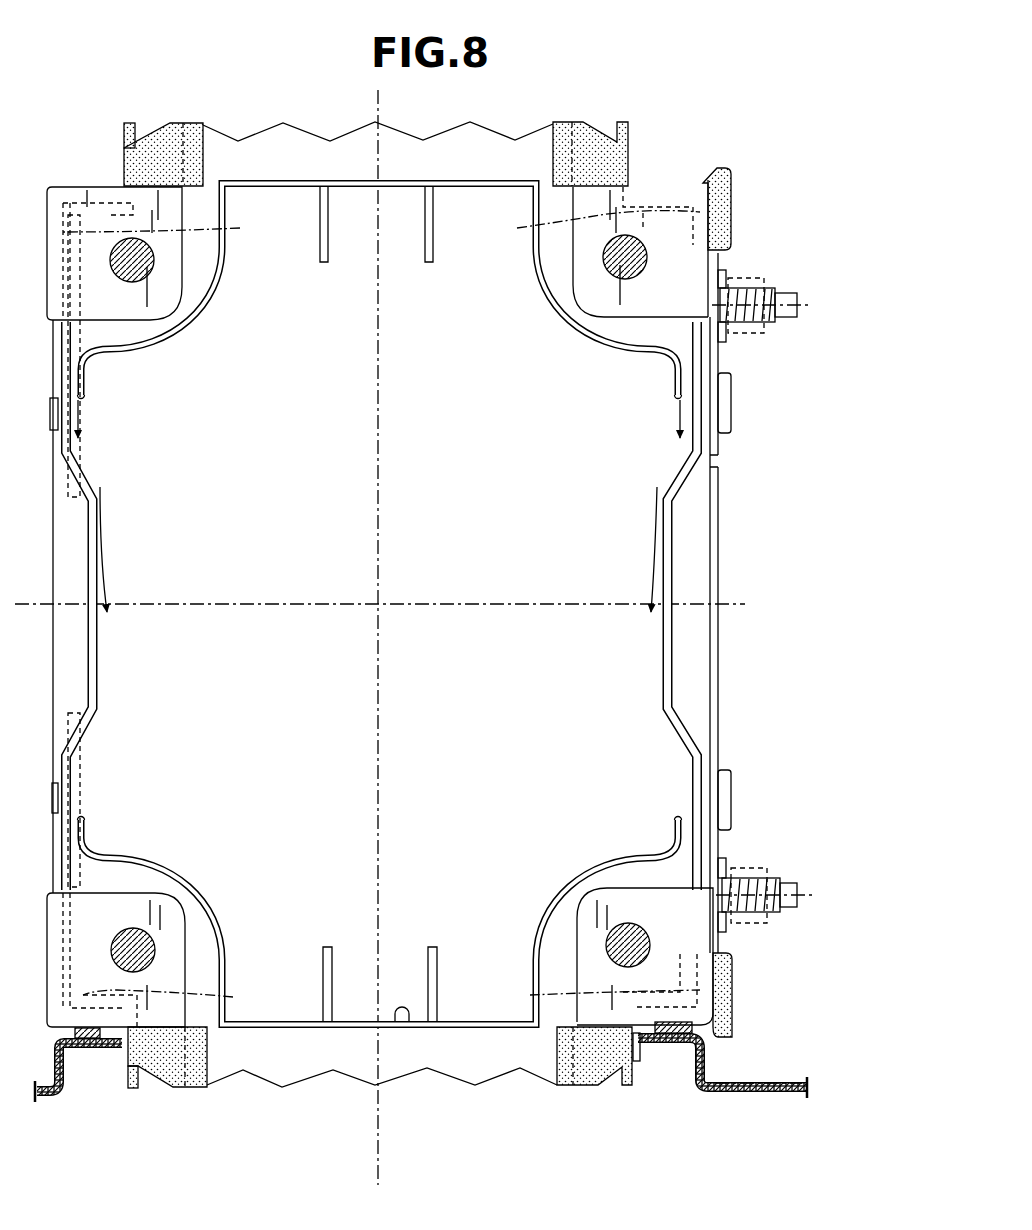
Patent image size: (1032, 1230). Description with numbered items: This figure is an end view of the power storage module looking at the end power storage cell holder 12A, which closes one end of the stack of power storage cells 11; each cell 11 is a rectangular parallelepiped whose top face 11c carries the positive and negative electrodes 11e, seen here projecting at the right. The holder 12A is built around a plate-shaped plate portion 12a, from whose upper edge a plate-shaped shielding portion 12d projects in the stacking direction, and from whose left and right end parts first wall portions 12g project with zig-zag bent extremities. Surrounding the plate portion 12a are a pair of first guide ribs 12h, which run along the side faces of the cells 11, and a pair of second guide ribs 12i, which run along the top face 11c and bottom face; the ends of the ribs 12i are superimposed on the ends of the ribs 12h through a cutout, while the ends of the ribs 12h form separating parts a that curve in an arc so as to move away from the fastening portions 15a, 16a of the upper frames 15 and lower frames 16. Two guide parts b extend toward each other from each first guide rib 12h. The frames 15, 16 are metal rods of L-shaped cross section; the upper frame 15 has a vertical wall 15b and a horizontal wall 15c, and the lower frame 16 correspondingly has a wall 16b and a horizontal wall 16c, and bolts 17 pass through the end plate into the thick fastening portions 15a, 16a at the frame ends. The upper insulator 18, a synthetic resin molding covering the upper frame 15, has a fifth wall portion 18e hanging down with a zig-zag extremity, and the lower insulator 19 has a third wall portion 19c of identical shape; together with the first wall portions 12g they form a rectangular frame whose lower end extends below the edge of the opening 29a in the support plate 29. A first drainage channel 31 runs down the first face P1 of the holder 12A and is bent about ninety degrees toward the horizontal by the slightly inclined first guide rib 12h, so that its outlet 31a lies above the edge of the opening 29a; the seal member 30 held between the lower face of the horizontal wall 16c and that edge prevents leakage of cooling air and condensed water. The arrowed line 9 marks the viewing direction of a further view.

The power storage cell 11 is at (738, 432).
The top face 11c is at (720, 460).
The positive and negative electrodes 11e is at (752, 300).
The end power storage cell holder 12A is at (431, 596).
The plate portion 12a is at (310, 519).
The shielding portion 12d is at (720, 640).
The first wall portion 12g is at (444, 130).
The first guide rib 12h is at (352, 176).
The second guide rib 12i is at (106, 643).
The upper frame 15 is at (569, 247).
The fastening portion 15a is at (610, 320).
The vertical wall 15b is at (675, 227).
The horizontal wall 15c is at (589, 610).
The lower frame 16 is at (190, 256).
The fastening portion 16a is at (107, 307).
The second bracket hidden portion 16b is at (70, 227).
The horizontal wall 16c is at (167, 614).
The bolt 17 is at (130, 275).
The upper insulator 18 is at (736, 182).
The fifth wall portion 18e is at (630, 138).
The lower insulator 19 is at (119, 158).
The third wall portion 19c is at (126, 130).
The support plate 29 is at (752, 1097).
The opening 29a is at (648, 1050).
The seal member 30 is at (667, 1033).
The first drainage channel 31 is at (314, 885).
The outlet 31a is at (403, 1024).
The first face P1 is at (424, 542).
The separating part a is at (190, 325).
The guide part b is at (428, 266).
The section line of FIG. 9 is at (362, 697).